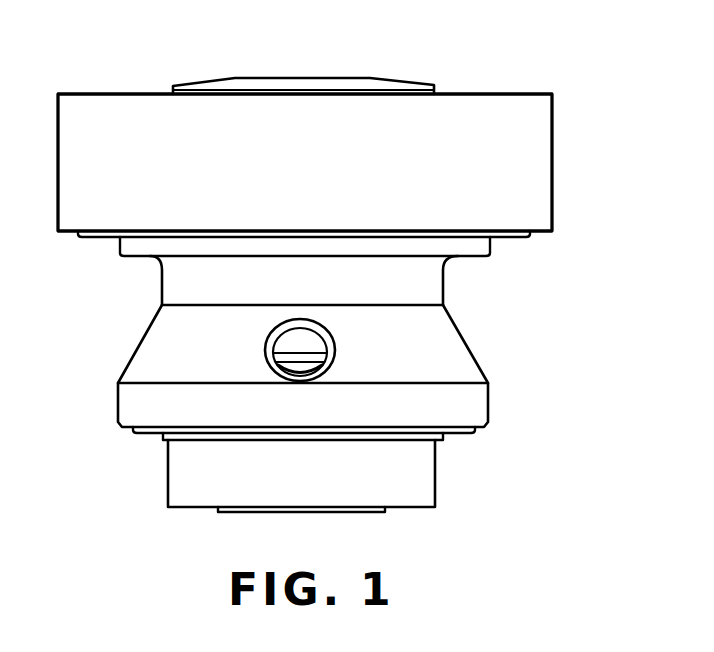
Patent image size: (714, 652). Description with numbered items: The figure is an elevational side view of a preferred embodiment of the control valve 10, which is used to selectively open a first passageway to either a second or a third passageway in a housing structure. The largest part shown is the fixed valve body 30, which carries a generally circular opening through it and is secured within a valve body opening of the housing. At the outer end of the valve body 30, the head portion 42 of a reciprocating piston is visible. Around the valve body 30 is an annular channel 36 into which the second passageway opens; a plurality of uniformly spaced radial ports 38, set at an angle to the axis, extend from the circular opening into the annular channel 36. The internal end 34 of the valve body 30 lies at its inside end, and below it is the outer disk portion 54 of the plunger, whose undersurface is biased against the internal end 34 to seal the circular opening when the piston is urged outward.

The control valve 10 is at (135, 76).
The fixed valve body 30 is at (528, 158).
The head portion 42 is at (330, 82).
The annular channel 36 is at (445, 285).
The radial ports 38 is at (275, 343).
The internal end 34 is at (440, 438).
The outer disk portion 54 is at (190, 473).